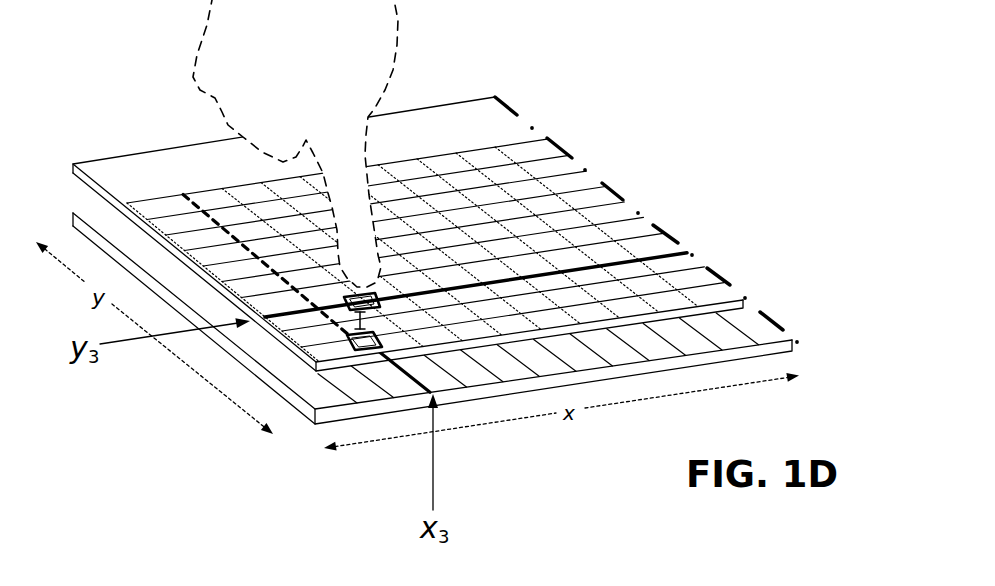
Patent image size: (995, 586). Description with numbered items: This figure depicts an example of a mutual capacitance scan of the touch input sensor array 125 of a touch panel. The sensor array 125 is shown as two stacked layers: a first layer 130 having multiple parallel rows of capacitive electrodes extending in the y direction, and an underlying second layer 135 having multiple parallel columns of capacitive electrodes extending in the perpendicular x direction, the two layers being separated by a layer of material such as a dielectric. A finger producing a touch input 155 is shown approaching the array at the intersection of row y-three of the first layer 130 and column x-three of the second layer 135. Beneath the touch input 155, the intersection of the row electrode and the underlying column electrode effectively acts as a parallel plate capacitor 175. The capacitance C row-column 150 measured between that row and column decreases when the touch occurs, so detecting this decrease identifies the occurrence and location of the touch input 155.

The touch input sensor array 125 is at (606, 124).
The first layer 130 is at (139, 141).
The second layer 135 is at (80, 205).
The capacitance C row-column 150 is at (424, 316).
The touch input 155 is at (405, 165).
The parallel plate capacitor 175 is at (342, 360).